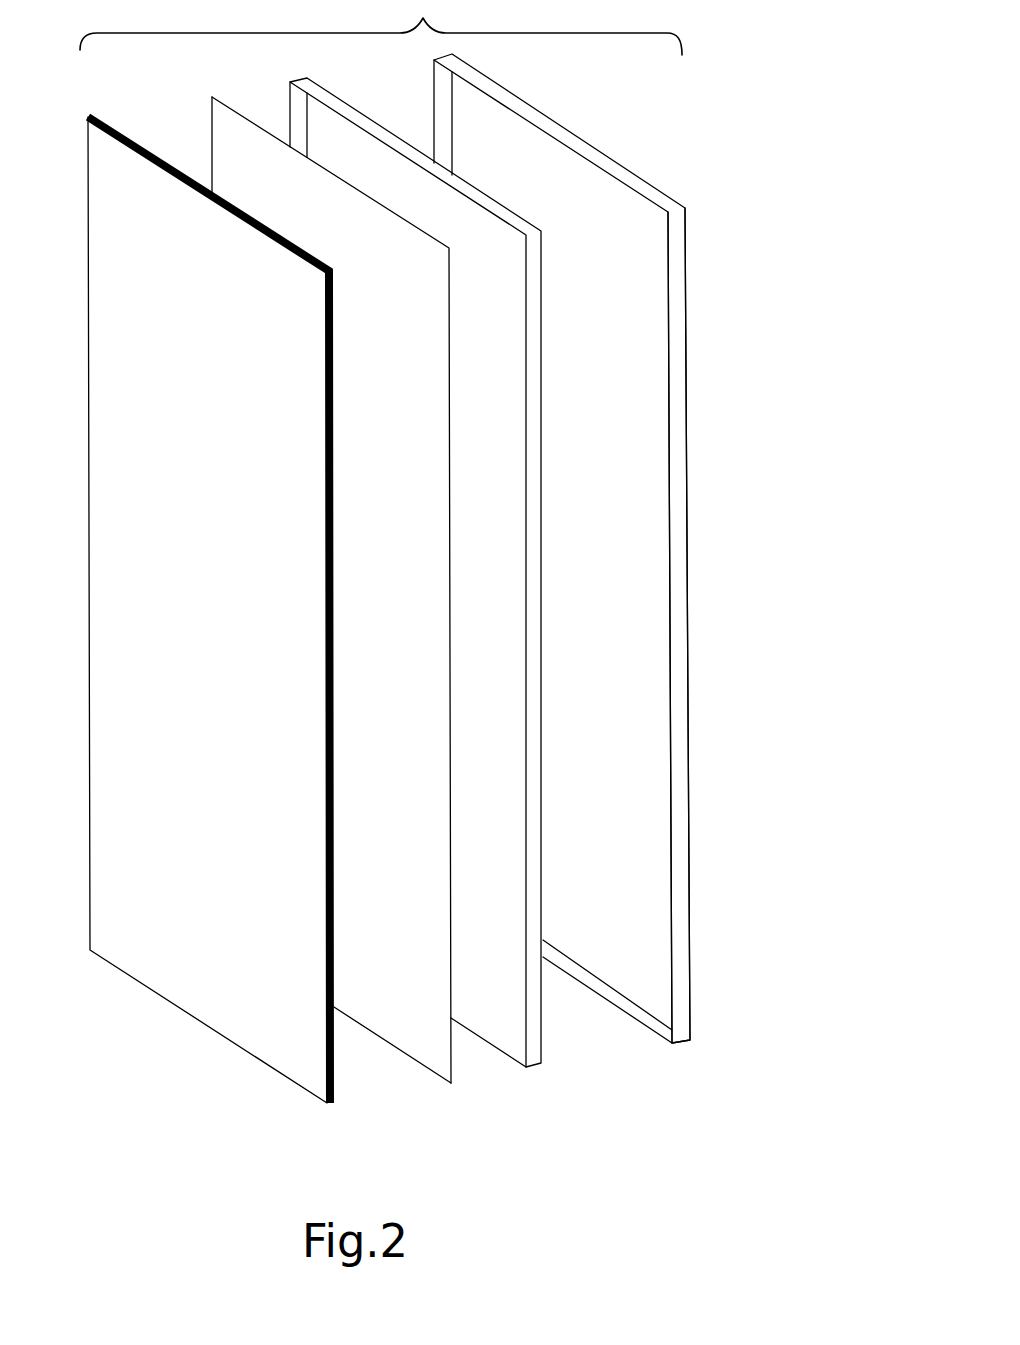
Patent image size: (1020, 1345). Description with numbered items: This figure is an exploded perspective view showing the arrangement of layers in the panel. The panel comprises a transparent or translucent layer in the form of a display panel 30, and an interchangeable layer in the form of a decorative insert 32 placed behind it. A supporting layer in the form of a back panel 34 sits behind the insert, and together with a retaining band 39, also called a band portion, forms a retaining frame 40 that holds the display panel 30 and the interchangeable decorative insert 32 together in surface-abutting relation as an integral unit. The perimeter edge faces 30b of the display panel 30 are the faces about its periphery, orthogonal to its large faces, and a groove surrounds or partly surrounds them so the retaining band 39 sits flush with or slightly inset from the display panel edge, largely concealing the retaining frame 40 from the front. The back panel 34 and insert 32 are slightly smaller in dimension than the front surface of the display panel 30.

The display panel 30 is at (262, 620).
The perimeter edge faces 30b is at (300, 251).
The decorative insert 32 is at (375, 1002).
The back panel 34 is at (490, 1008).
The retaining band 39 is at (688, 504).
The retaining frame 40 is at (682, 605).